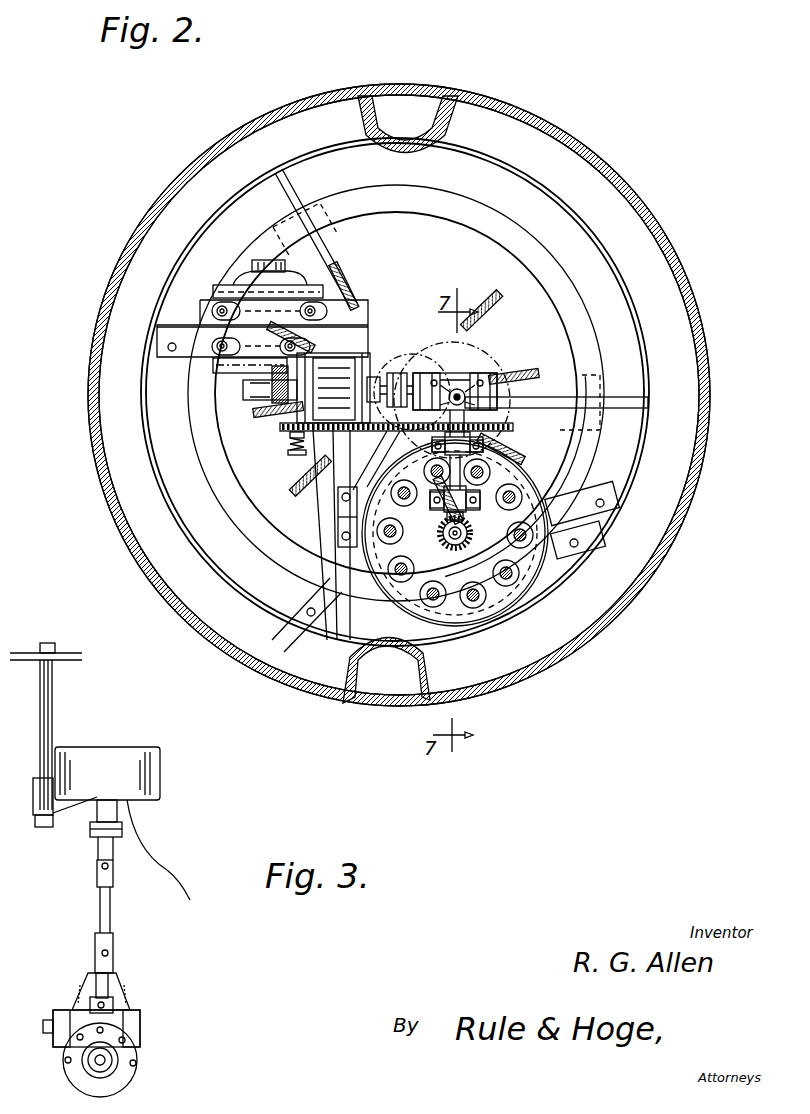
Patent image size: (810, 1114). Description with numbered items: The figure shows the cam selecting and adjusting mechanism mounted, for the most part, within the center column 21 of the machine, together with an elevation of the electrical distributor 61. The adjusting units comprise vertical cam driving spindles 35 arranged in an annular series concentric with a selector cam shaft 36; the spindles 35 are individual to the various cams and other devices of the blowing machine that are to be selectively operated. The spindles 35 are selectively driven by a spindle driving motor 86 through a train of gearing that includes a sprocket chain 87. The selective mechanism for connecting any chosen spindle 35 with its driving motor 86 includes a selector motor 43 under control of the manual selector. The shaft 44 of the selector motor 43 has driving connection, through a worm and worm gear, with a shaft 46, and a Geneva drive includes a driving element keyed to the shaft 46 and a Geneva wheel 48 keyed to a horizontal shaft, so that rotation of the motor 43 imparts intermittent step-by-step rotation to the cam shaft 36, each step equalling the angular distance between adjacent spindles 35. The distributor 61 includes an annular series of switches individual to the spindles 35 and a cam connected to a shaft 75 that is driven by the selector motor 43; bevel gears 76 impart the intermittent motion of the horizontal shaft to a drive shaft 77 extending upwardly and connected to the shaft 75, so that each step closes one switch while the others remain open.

In FIG. 2, the center column 21 is at (684, 290).
In FIG. 2, the cam driving spindle 35 is at (404, 535).
In FIG. 2, the selector cam shaft 36 is at (452, 548).
In FIG. 2, the selector motor 43 is at (386, 340).
In FIG. 2, the shaft of the selector motor 44 is at (402, 352).
In FIG. 3, the shaft of the selector motor 44 is at (44, 1027).
In FIG. 3, the shaft 46 is at (102, 1060).
In FIG. 2, the Geneva wheel 48 is at (496, 420).
In FIG. 2, the distributor 61 is at (470, 354).
In FIG. 3, the distributor 61 is at (160, 778).
In FIG. 3, the shaft 75 is at (92, 828).
In FIG. 3, the bevel gears 76 is at (112, 1005).
In FIG. 2, the drive shaft 77 is at (468, 378).
In FIG. 3, the drive shaft 77 is at (110, 916).
In FIG. 2, the spindle driving motor 86 is at (242, 285).
In FIG. 2, the sprocket chain 87 is at (404, 436).